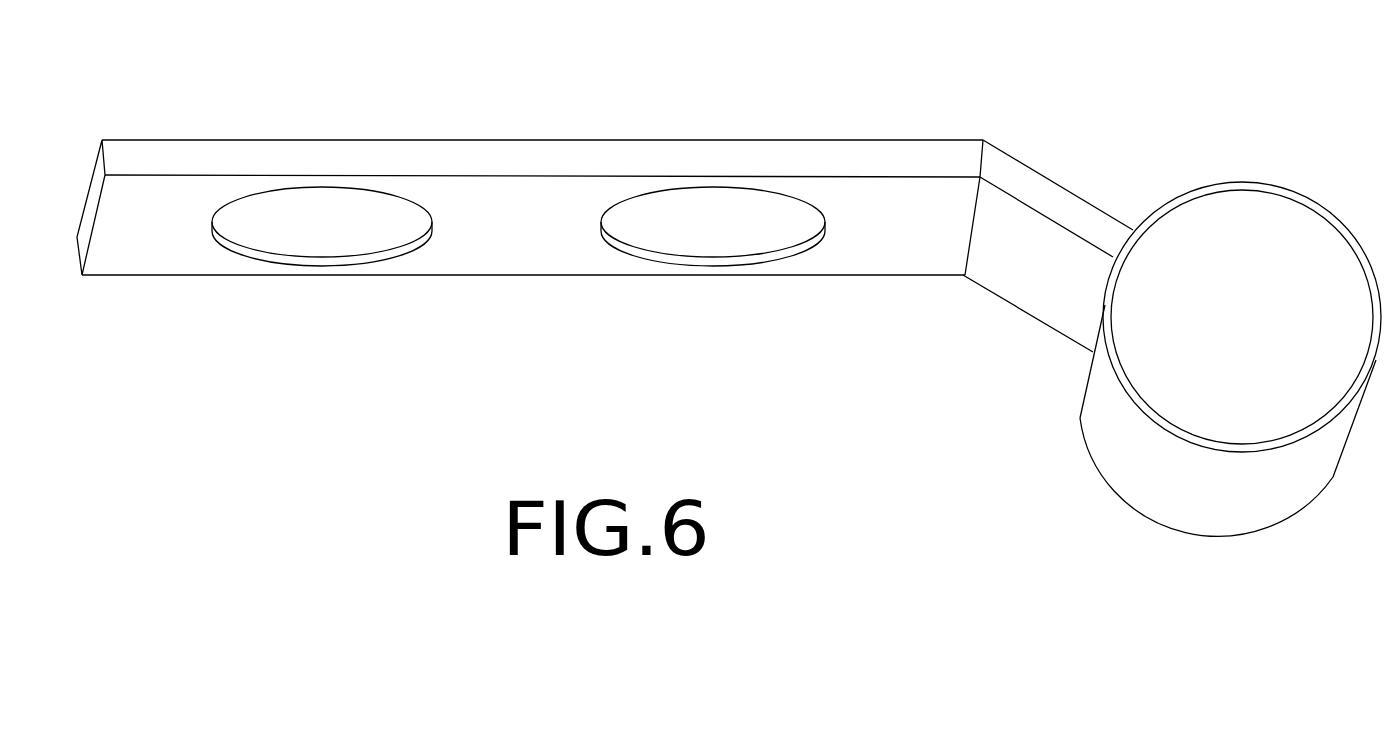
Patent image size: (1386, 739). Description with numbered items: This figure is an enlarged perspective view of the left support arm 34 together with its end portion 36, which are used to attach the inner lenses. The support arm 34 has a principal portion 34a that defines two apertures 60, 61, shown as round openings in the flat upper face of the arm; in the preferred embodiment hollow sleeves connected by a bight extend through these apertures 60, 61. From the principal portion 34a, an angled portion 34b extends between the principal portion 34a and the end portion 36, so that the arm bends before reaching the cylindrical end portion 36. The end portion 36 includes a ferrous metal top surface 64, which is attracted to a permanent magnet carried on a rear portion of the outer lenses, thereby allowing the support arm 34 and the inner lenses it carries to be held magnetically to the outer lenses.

The left support arm 34 is at (788, 155).
The principal portion 34a is at (522, 237).
The angled portion 34b is at (1048, 290).
The aperture 60 is at (335, 223).
The aperture 61 is at (718, 227).
The ferrous metal top surface 64 is at (1262, 255).
The end portion 36 is at (1227, 502).